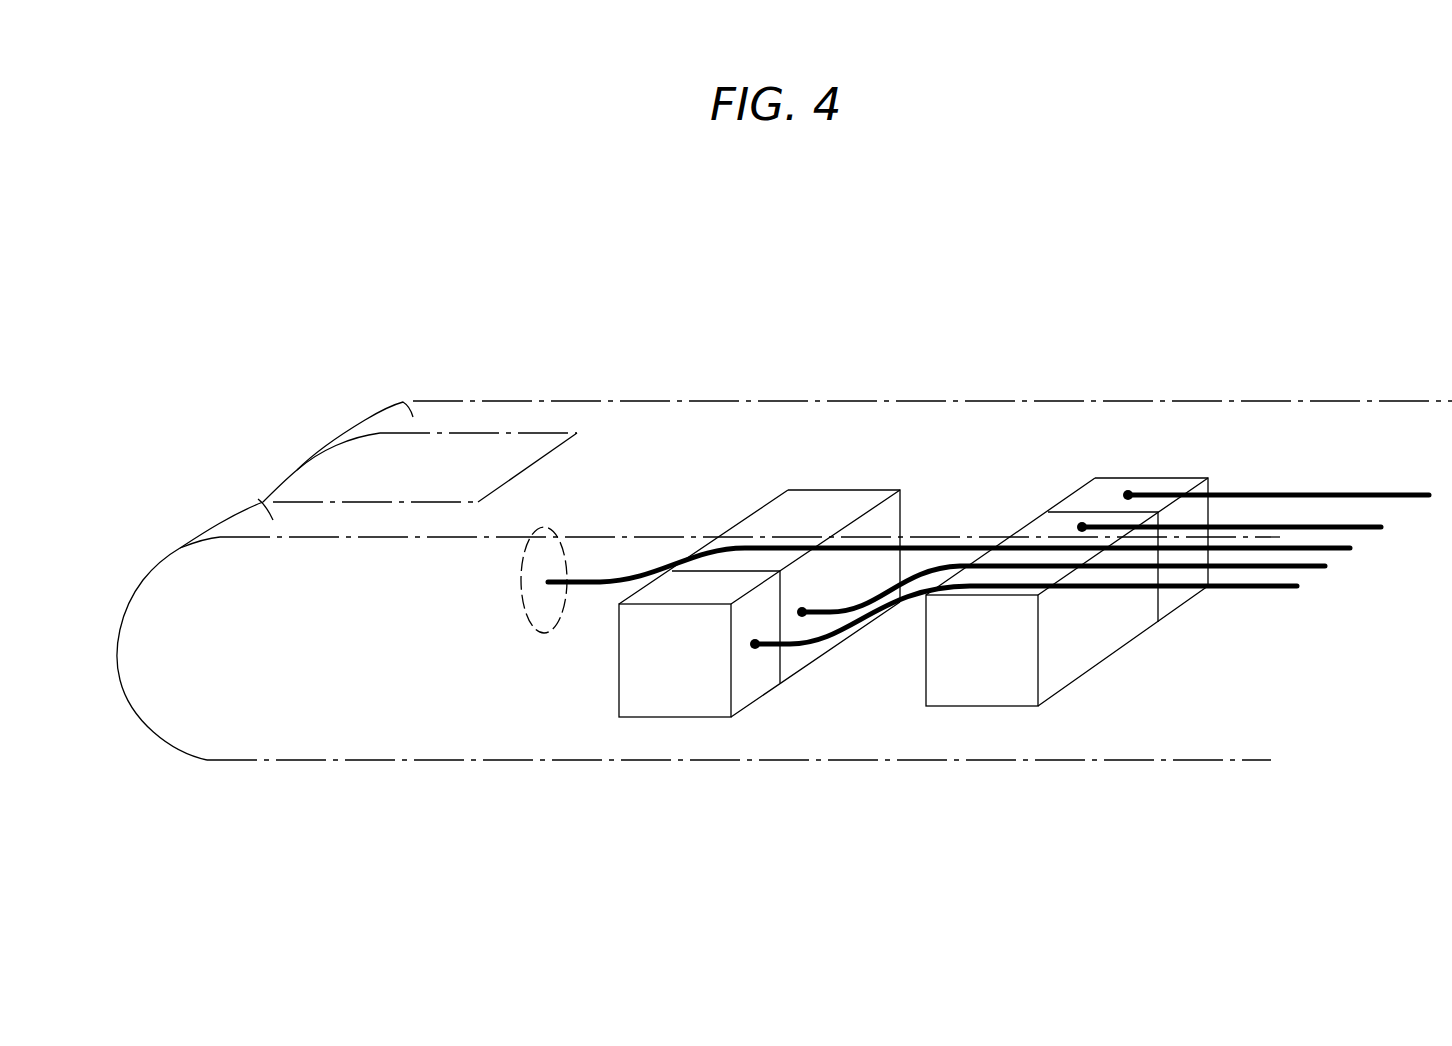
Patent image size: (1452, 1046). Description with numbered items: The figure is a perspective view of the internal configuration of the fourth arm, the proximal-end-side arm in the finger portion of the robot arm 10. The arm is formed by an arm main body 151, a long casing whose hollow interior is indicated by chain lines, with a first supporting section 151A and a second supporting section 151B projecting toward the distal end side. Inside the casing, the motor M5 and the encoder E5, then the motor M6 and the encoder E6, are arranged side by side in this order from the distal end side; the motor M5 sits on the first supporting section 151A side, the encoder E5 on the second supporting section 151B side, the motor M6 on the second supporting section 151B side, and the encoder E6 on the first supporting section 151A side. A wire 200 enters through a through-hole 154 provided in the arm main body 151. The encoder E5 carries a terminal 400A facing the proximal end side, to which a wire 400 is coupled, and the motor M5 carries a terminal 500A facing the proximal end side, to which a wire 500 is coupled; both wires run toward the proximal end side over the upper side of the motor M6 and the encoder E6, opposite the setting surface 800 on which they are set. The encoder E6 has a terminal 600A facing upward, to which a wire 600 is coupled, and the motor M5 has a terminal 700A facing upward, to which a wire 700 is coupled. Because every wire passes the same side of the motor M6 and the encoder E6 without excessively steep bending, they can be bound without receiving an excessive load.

The robot arm 10 is at (318, 298).
The arm main body 151 is at (758, 400).
The first supporting section 151A is at (400, 402).
The second supporting section 151B is at (243, 500).
The through-hole 154 is at (548, 530).
The wire 200 is at (622, 572).
The encoder E5 is at (667, 665).
The motor M5 is at (840, 508).
The terminal 500A is at (802, 610).
The wire 500 is at (917, 570).
The terminal 400A is at (755, 646).
The wire 400 is at (862, 618).
The encoder E6 is at (1175, 597).
The motor M6 is at (1082, 642).
The terminal 700A is at (1082, 525).
The wire 700 is at (1238, 524).
The terminal 600A is at (1128, 493).
The wire 600 is at (1318, 492).
The setting surface 800 is at (1228, 710).